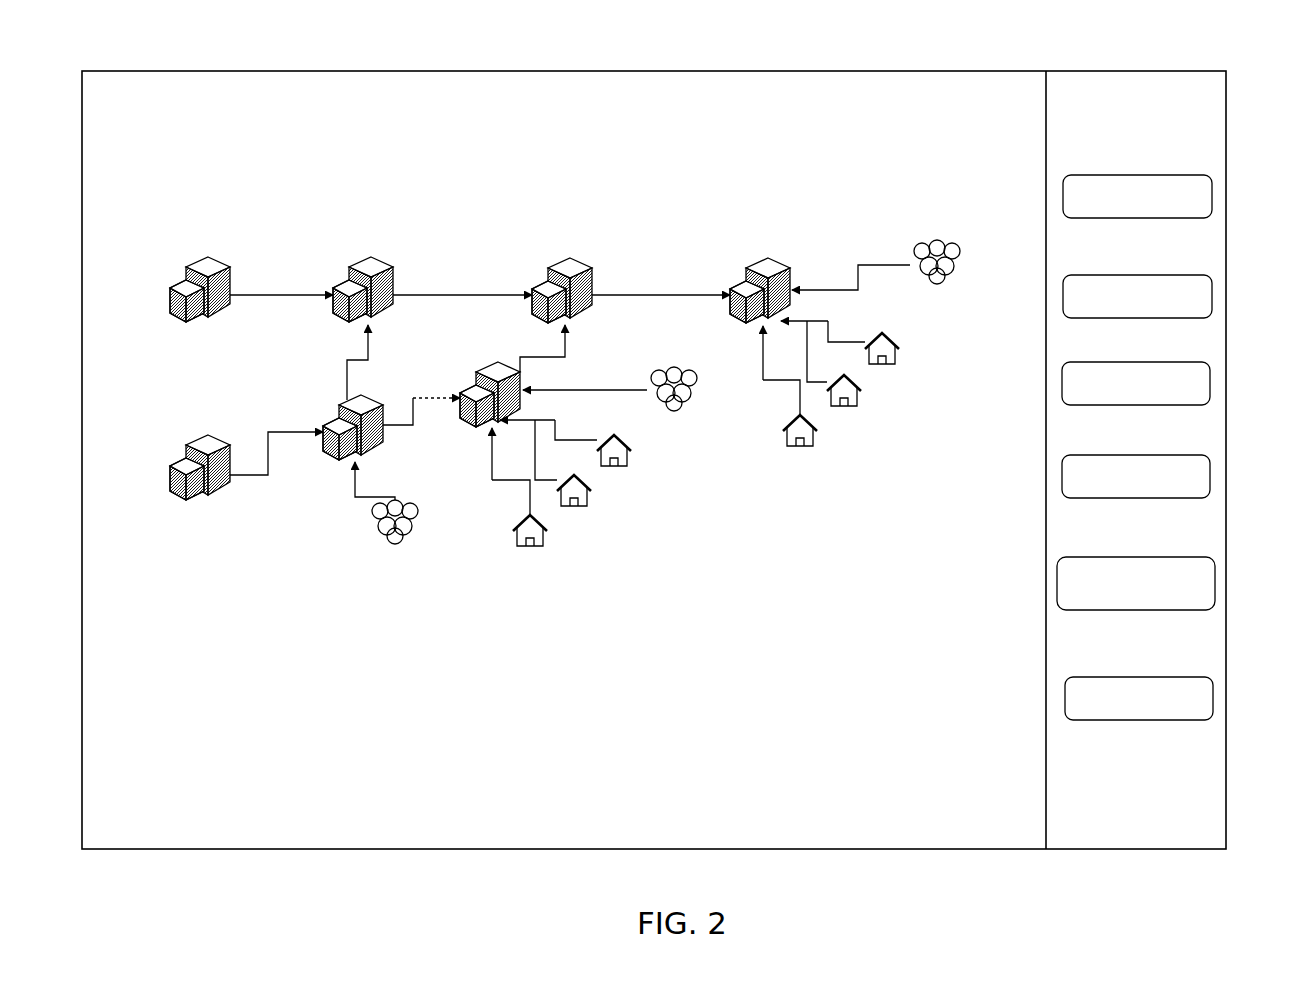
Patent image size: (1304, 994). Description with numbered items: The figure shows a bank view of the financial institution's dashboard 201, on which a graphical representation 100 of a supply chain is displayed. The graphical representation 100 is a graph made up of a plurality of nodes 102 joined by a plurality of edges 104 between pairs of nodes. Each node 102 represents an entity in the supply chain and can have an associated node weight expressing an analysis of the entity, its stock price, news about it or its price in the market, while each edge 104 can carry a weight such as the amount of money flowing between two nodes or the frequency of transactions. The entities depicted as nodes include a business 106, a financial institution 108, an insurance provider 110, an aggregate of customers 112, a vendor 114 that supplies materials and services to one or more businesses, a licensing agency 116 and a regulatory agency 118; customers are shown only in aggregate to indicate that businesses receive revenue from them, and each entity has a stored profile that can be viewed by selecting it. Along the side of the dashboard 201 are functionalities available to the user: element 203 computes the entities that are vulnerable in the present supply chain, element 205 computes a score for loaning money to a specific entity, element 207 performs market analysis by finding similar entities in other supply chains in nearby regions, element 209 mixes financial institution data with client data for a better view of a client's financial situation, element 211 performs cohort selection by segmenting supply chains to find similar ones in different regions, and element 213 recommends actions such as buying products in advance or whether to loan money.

The graphical representation 100 is at (781, 195).
The node 102 is at (564, 395).
The edge 104 is at (250, 292).
The business 106 is at (352, 262).
The financial institution 108 is at (340, 463).
The insurance provider 110 is at (628, 456).
The aggregate of customers 112 is at (964, 263).
The vendor 114 is at (588, 494).
The licensing agency 116 is at (190, 263).
The regulatory agency 118 is at (186, 500).
The dashboard 201 is at (462, 70).
The supply chain vulnerabilities element 203 is at (1208, 177).
The score-loan element 205 is at (1208, 277).
The market analysis element 207 is at (1207, 363).
The client analysis element 209 is at (1206, 456).
The cohort selection element 211 is at (1215, 567).
The actions element 213 is at (1206, 679).